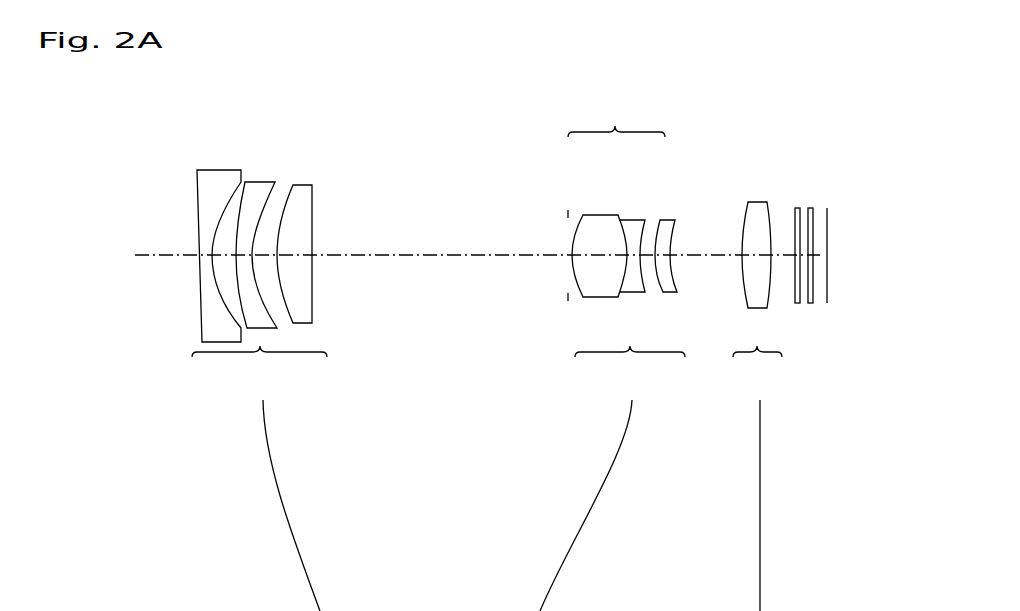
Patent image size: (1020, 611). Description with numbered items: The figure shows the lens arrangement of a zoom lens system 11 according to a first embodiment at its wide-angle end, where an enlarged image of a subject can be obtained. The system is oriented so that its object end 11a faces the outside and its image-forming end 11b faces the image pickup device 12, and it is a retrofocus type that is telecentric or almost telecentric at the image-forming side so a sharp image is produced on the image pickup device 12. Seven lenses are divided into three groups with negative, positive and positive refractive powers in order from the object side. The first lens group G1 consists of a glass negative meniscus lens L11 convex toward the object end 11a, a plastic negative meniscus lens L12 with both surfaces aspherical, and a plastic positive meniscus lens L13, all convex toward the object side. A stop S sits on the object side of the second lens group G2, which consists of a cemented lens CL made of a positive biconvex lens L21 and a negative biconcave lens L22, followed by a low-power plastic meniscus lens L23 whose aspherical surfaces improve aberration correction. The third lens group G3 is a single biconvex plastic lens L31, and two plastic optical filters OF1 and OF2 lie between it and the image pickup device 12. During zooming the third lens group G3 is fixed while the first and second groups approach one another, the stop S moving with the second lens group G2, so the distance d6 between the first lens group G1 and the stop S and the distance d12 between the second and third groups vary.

The zoom lens system 11 is at (712, 80).
The object end 11a is at (150, 200).
The image-forming end 11b is at (786, 182).
The image pickup device 12 is at (828, 228).
The first lens group G1 is at (276, 354).
The second lens group G2 is at (633, 357).
The third lens group G3 is at (759, 376).
The negative meniscus lens L11 is at (218, 170).
The negative meniscus lens L12 is at (262, 182).
The positive meniscus lens L13 is at (305, 185).
The positive biconvex lens L21 is at (599, 215).
The negative biconcave lens L22 is at (628, 220).
The low-power meniscus lens L23 is at (672, 220).
The biconvex plastic lens L31 is at (755, 202).
The cemented lens CL is at (612, 200).
The stop S is at (566, 214).
The distance between first lens group and stop d6 is at (442, 257).
The distance between second lens group and third lens group d12 is at (710, 257).
The optical filter OF1 is at (797, 304).
The optical filter OF2 is at (811, 304).